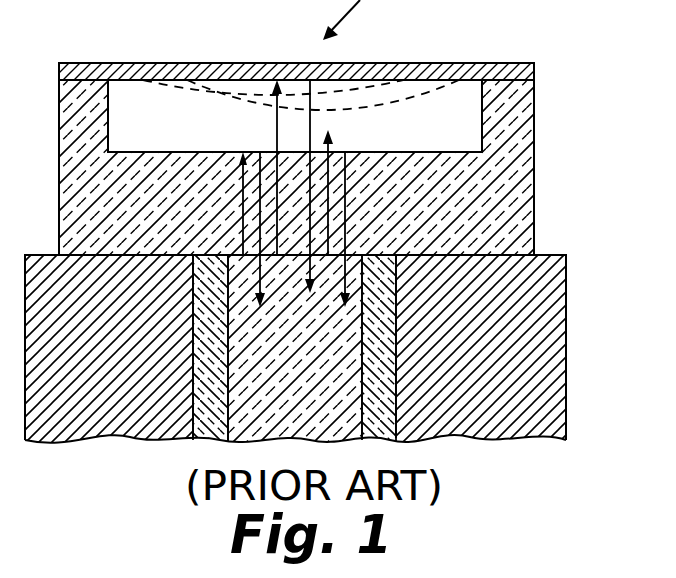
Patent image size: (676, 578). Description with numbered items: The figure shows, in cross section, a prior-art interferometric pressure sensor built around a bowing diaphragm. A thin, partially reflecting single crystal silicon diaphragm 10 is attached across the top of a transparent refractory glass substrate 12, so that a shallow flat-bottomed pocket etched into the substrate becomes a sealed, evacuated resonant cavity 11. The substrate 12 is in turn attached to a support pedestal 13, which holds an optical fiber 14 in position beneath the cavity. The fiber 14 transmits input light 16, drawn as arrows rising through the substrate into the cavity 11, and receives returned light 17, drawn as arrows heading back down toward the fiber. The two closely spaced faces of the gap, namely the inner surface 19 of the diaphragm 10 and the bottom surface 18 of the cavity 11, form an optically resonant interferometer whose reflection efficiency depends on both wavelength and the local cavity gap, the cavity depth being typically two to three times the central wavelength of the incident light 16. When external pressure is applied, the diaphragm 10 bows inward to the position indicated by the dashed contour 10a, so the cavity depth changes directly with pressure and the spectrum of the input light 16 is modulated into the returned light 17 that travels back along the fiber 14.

The bowing diaphragm 10 is at (130, 75).
The bowed diaphragm position 10a is at (257, 108).
The resonant cavity 11 is at (467, 97).
The transparent substrate 12 is at (514, 191).
The support pedestal 13 is at (546, 333).
The optical fiber 14 is at (386, 360).
The input light 16 is at (240, 203).
The returned light 17 is at (255, 283).
The bottom surface of cavity 18 is at (182, 150).
The inner surface of diaphragm 19 is at (363, 80).